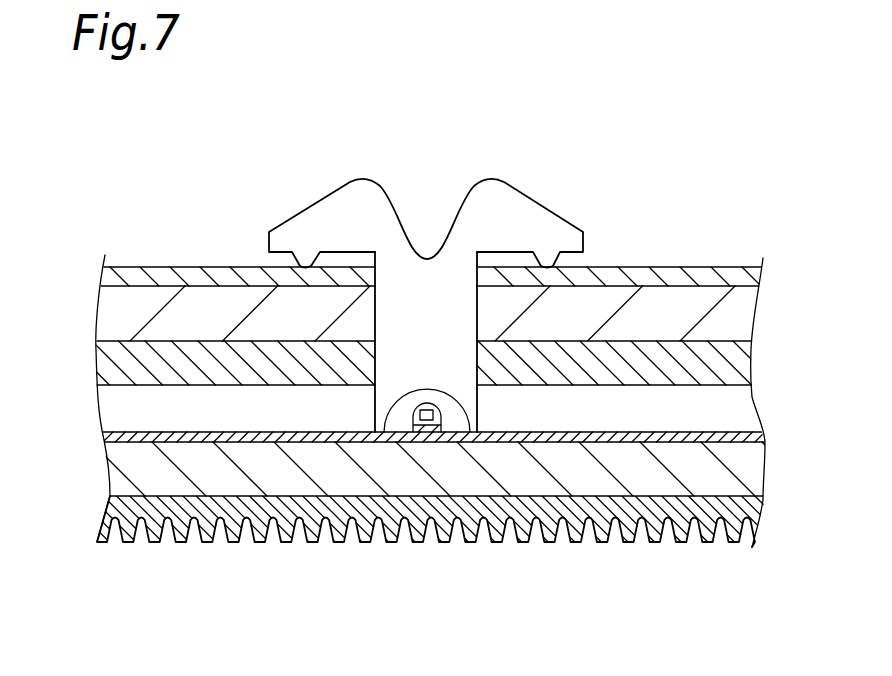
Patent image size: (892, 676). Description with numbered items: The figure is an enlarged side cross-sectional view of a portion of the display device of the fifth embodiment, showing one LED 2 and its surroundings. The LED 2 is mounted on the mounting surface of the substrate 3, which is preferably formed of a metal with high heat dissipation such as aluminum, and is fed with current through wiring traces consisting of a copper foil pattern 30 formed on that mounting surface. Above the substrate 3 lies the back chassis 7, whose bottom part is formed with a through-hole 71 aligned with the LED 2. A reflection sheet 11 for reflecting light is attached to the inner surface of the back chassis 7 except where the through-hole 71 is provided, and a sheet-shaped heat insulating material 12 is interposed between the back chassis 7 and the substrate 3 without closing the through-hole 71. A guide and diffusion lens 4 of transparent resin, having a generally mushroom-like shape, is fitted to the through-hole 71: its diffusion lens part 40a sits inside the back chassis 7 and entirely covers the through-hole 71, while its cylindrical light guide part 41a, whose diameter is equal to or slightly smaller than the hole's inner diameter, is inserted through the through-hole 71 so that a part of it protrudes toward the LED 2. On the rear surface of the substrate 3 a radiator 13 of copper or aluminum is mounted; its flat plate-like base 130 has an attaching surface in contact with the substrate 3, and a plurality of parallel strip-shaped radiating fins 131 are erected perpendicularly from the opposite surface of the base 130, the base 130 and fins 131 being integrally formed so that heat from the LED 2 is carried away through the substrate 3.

The light emitting diode 2 is at (410, 420).
The substrate 3 is at (750, 475).
The guide and diffusion lens 4 is at (389, 256).
The back chassis 7 is at (737, 320).
The reflection sheet 11 is at (667, 273).
The heat insulating material 12 is at (747, 377).
The radiator 13 is at (391, 584).
The copper foil pattern 30 is at (760, 440).
The diffusion lens part 40a is at (537, 203).
The light guide part 41a is at (388, 363).
The through-hole 71 is at (376, 310).
The base 130 is at (103, 503).
The radiating fin 131 is at (421, 557).